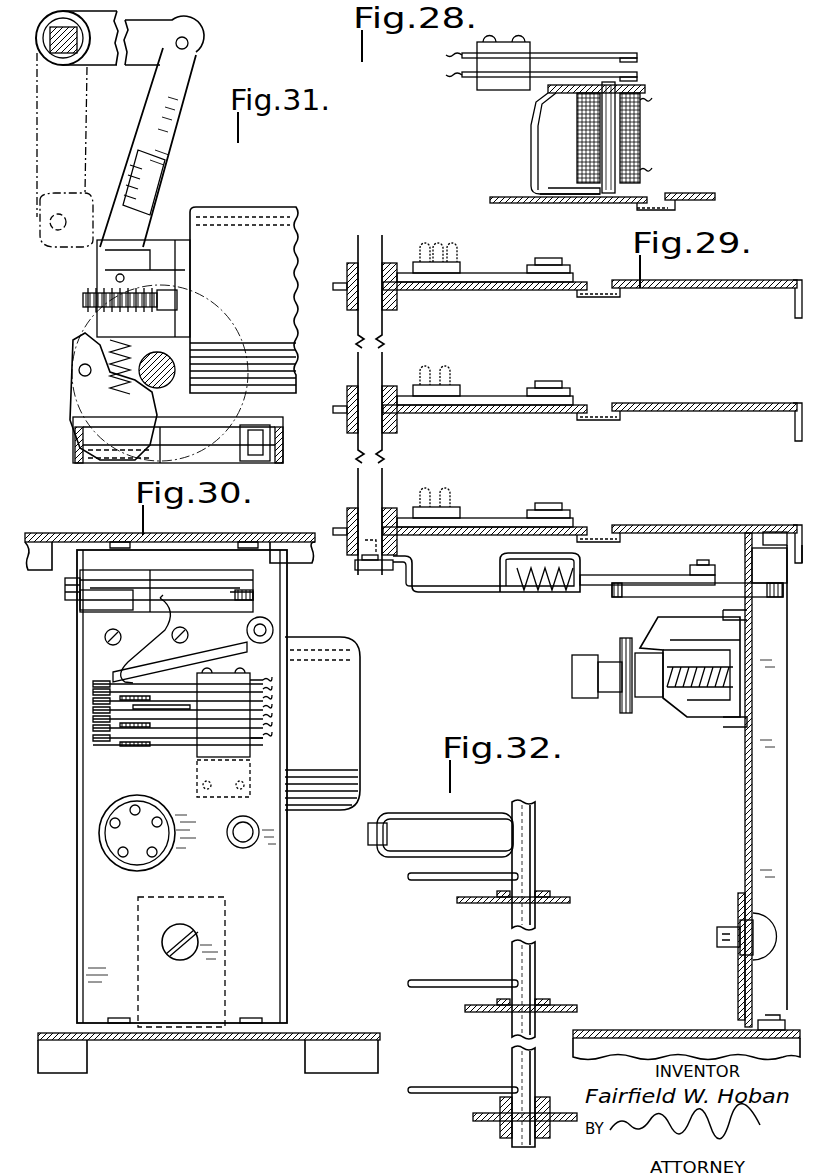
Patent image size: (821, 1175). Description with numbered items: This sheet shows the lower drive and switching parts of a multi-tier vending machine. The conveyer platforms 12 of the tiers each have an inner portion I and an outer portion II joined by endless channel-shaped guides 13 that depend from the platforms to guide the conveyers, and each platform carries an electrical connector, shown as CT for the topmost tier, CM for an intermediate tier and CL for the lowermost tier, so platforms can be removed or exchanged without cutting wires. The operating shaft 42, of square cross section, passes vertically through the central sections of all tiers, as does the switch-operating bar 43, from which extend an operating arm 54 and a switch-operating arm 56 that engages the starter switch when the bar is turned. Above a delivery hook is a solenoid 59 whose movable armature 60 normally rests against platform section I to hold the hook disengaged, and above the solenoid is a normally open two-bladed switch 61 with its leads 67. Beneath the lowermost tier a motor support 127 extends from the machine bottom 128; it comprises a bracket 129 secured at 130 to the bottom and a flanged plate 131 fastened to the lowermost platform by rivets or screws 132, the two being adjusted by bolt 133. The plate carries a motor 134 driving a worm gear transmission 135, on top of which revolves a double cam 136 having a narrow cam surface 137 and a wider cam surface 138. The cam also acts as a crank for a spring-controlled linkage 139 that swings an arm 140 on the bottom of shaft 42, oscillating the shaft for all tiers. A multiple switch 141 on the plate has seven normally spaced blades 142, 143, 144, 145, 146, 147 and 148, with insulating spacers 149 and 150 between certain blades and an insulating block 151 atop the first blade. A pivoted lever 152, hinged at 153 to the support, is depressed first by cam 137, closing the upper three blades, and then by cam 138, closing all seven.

In FIG. 28, the conveyer platform 12 is at (708, 192).
In FIG. 29, the conveyer platform 12 is at (766, 279).
In FIG. 28, the channel-shaped guide 13 is at (645, 210).
In FIG. 29, the channel-shaped guide 13 is at (614, 299).
In FIG. 28, the operating shaft 42 is at (590, 203).
In FIG. 31, the operating shaft 42 is at (58, 60).
In FIG. 29, the operating shaft 42 is at (383, 352).
In FIG. 32, the switch-operating bar 43 is at (536, 838).
In FIG. 32, the operating arm 54 is at (438, 882).
In FIG. 32, the switch-operating arm 56 is at (412, 815).
In FIG. 28, the solenoid 59 is at (630, 140).
In FIG. 28, the movable armature 60 is at (612, 160).
In FIG. 28, the two-bladed switch 61 is at (645, 84).
In FIG. 28, the lead 67 is at (598, 46).
In FIG. 29, the motor support 127 is at (745, 813).
In FIG. 30, the motor support 127 is at (97, 888).
In FIG. 29, the machine bottom 128 is at (638, 1030).
In FIG. 30, the machine bottom 128 is at (209, 1053).
In FIG. 29, the bracket 129 is at (740, 990).
In FIG. 30, the bracket 129 is at (227, 977).
In FIG. 29, the fastening 130 is at (780, 1017).
In FIG. 30, the fastening 130 is at (116, 1018).
In FIG. 29, the flanged plate 131 is at (745, 857).
In FIG. 30, the flanged plate 131 is at (262, 910).
In FIG. 29, the rivets or screws 132 is at (772, 533).
In FIG. 30, the rivets or screws 132 is at (235, 555).
In FIG. 29, the bolt 133 is at (717, 937).
In FIG. 30, the bolt 133 is at (165, 941).
In FIG. 31, the motor 134 is at (240, 222).
In FIG. 30, the motor 134 is at (350, 664).
In FIG. 31, the worm gear transmission 135 is at (90, 279).
In FIG. 29, the worm gear transmission 135 is at (668, 714).
In FIG. 31, the double cam 136 is at (70, 405).
In FIG. 29, the double cam 136 is at (612, 592).
In FIG. 30, the double cam 136 is at (64, 603).
In FIG. 29, the narrow cam surface 137 is at (657, 598).
In FIG. 30, the narrow cam surface 137 is at (258, 597).
In FIG. 29, the wider cam surface 138 is at (772, 598).
In FIG. 30, the wider cam surface 138 is at (115, 600).
In FIG. 31, the spring-controlled linkage 139 is at (168, 185).
In FIG. 29, the spring-controlled linkage 139 is at (439, 596).
In FIG. 31, the lever arm 140 is at (133, 62).
In FIG. 29, the lever arm 140 is at (356, 570).
In FIG. 30, the multiple switch 141 is at (275, 703).
In FIG. 30, the switch blade 142 is at (93, 683).
In FIG. 30, the double contact blade 143 is at (93, 692).
In FIG. 30, the switch blade 144 is at (93, 701).
In FIG. 30, the switch blade 145 is at (93, 710).
In FIG. 30, the switch blade 146 is at (93, 719).
In FIG. 30, the switch blade 147 is at (93, 729).
In FIG. 30, the switch blade 148 is at (93, 740).
In FIG. 30, the insulating spacer 149 is at (138, 710).
In FIG. 30, the insulating spacer 150 is at (125, 745).
In FIG. 30, the insulating block 151 is at (120, 675).
In FIG. 31, the pivoted lever 152 is at (225, 447).
In FIG. 30, the pivoted lever 152 is at (158, 622).
In FIG. 31, the hinge 153 is at (268, 449).
In FIG. 30, the hinge 153 is at (270, 630).
In FIG. 29, the topmost tier connector CT is at (462, 270).
In FIG. 29, the intermediate tier connector CM is at (462, 393).
In FIG. 29, the lowermost tier connector CL is at (462, 512).
In FIG. 28, the inner platform portion I is at (520, 204).
In FIG. 29, the inner platform portion I is at (492, 296).
In FIG. 28, the outer platform portion II is at (692, 193).
In FIG. 29, the outer platform portion II is at (745, 292).